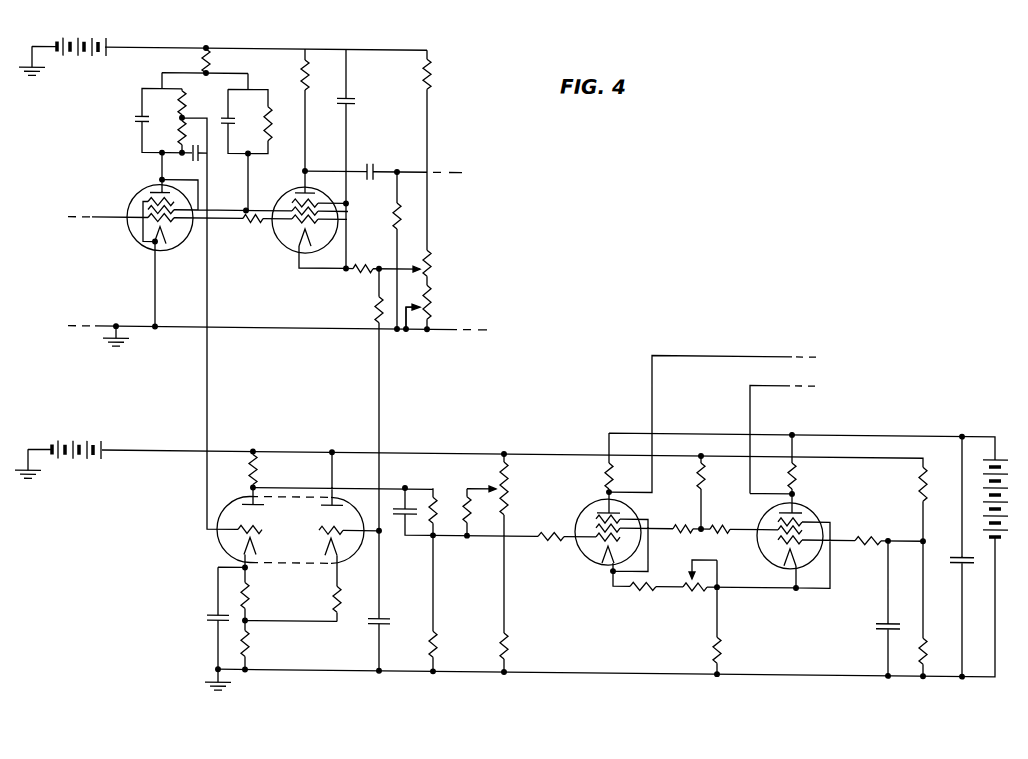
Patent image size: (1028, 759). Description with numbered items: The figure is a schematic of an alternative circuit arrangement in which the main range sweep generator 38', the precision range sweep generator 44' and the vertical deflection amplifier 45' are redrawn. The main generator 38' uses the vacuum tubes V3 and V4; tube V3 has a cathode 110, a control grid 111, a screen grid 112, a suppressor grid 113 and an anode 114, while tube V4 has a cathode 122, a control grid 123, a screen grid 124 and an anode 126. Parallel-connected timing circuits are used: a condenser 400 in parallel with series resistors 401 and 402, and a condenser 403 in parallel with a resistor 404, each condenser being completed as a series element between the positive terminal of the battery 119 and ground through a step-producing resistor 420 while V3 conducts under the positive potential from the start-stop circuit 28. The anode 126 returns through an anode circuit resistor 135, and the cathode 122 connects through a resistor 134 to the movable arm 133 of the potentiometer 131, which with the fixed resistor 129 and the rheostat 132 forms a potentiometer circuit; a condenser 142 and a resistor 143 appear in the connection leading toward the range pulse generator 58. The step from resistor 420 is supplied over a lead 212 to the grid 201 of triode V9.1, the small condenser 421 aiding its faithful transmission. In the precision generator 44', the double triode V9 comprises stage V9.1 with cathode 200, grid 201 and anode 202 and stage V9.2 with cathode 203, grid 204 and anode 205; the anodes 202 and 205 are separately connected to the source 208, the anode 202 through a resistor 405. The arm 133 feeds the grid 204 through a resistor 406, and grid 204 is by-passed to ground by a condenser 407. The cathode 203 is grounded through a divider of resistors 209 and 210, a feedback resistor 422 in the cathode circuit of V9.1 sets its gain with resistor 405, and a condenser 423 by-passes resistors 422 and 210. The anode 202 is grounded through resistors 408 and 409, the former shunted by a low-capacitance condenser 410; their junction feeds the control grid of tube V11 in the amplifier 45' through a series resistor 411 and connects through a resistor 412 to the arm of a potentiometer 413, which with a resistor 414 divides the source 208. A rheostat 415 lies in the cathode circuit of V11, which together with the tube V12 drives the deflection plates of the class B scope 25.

The battery 119 is at (86, 62).
The step-producing resistor 420 is at (201, 59).
The resistor 401 is at (180, 100).
The resistor 402 is at (180, 130).
The condenser 400 is at (138, 124).
The condenser 421 is at (200, 157).
The condenser 403 is at (250, 110).
The resistor 404 is at (271, 121).
The anode circuit resistor 135 is at (300, 60).
The fixed resistor 129 is at (421, 68).
The capacitor 142 is at (374, 165).
The resistor 143 is at (401, 213).
The vacuum tube V3 is at (168, 222).
The anode 114 is at (157, 183).
The suppressor grid 113 is at (174, 200).
The screen grid 112 is at (148, 207).
The control grid 111 is at (168, 236).
The cathode 110 is at (164, 247).
The vacuum tube V4 is at (315, 218).
The anode 126 is at (308, 193).
The screen grid 124 is at (334, 209).
The control grid 123 is at (347, 217).
The cathode 122 is at (297, 237).
The resistor 134 is at (372, 253).
The resistor 406 is at (376, 306).
The movable arm 133 is at (402, 263).
The adjustable potentiometer 131 is at (425, 274).
The rheostat 132 is at (428, 310).
The lead 212 is at (207, 373).
The start-stop circuit 28 is at (75, 295).
The range pulse generator 58 is at (487, 270).
The alternative main range sweep generator 38' is at (271, 17).
The source of steady electromotive force 208 is at (96, 437).
The anode circuit resistor 405 is at (260, 466).
The double triode V9 is at (284, 531).
The triode stage V9.1 is at (244, 517).
The triode stage V9.2 is at (349, 532).
The anode 202 is at (260, 500).
The control grid 201 is at (238, 528).
The cathode 200 is at (246, 542).
The anode 205 is at (337, 499).
The control grid 204 is at (339, 540).
The cathode 203 is at (341, 560).
The feedback resistor 422 is at (251, 597).
The condenser 423 is at (206, 616).
The resistor 210 is at (251, 642).
The resistor 209 is at (332, 599).
The condenser 407 is at (371, 621).
The condenser 410 is at (413, 503).
The resistor 408 is at (436, 503).
The resistor 412 is at (465, 516).
The potentiometer 413 is at (508, 488).
The resistor 409 is at (437, 640).
The resistor 414 is at (509, 640).
The series resistor 411 is at (548, 523).
The alternative precision range sweep generator 44' is at (348, 706).
The vacuum tube V11 is at (593, 500).
The vacuum tube V12 is at (770, 505).
The rheostat 415 is at (690, 567).
The class B scope 25 is at (920, 372).
The alternative vertical deflection amplifier 45' is at (769, 710).